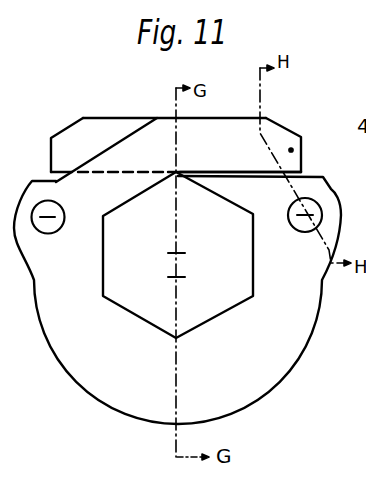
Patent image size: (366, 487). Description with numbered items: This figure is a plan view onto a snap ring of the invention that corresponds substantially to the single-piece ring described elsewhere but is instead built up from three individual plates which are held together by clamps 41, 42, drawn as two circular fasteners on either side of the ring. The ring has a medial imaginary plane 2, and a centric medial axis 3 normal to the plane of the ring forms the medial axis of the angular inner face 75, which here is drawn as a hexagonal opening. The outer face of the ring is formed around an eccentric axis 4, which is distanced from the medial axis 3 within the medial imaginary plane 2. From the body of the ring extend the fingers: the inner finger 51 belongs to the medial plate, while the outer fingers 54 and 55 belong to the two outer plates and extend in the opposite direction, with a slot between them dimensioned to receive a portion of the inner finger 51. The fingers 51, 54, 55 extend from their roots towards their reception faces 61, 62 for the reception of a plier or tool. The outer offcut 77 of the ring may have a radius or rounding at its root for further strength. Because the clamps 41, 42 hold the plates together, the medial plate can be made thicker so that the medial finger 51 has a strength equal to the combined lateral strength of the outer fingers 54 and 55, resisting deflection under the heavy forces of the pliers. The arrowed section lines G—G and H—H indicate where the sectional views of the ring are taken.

The medial imaginary plane 2 is at (178, 192).
The medial axis 3 is at (180, 252).
The eccentric axis 4 is at (180, 277).
The left bore 41 is at (52, 221).
The clamp 42 is at (312, 221).
The inner finger 51 is at (87, 132).
The outer finger 54 is at (291, 150).
The outer finger 55 is at (313, 49).
The reception face 61 is at (51, 153).
The reception face 62 is at (302, 157).
The angular inner face 75 is at (125, 307).
The outer offcut 77 is at (215, 172).